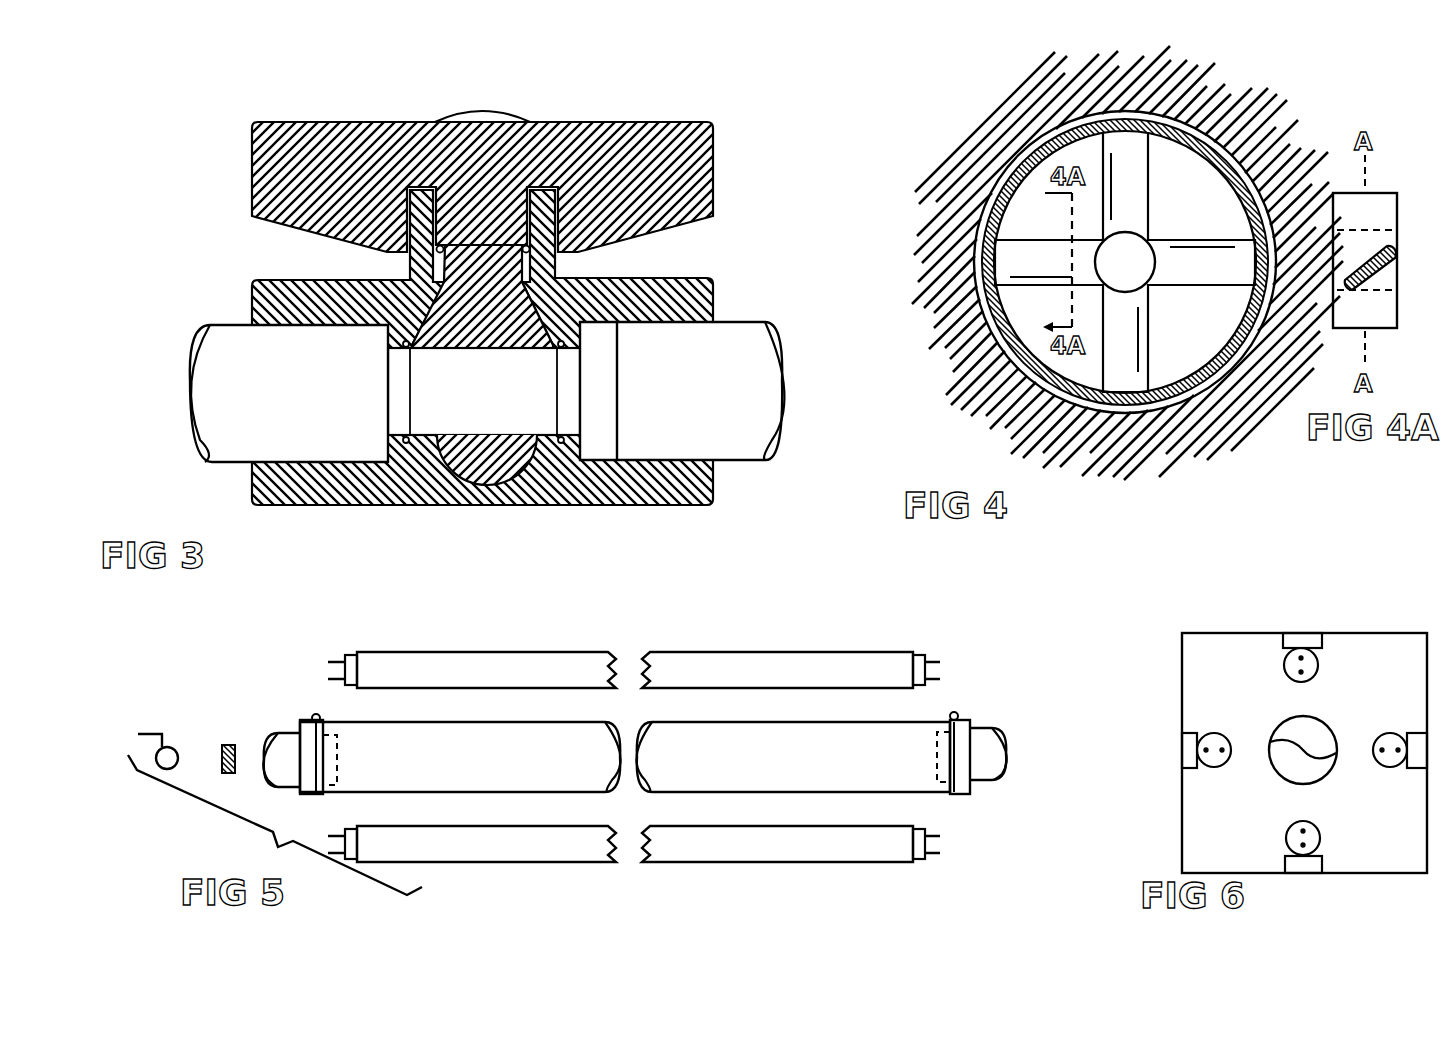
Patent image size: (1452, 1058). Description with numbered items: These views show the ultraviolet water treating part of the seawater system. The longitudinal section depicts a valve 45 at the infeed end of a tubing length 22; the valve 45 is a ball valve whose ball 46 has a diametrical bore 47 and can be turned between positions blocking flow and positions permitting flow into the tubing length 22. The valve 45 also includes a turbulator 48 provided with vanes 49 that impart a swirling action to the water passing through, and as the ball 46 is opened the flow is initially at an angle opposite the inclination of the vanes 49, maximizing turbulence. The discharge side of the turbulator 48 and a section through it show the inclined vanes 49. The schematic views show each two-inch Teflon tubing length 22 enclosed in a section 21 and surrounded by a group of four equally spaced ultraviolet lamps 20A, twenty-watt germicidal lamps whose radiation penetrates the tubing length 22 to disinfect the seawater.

In FIG. 3, the valve 45 is at (266, 108).
In FIG. 5, the valve 45 is at (170, 746).
In FIG. 3, the tubing length 22 is at (770, 322).
In FIG. 5, the tubing length 22 is at (634, 753).
In FIG. 6, the tubing length 22 is at (1280, 780).
In FIG. 3, the ball 46 is at (446, 466).
In FIG. 3, the diametrical bore 47 is at (492, 428).
In FIG. 3, the turbulator 48 is at (596, 452).
In FIG. 4, the turbulator 48 is at (1048, 382).
In FIG. 4, the vanes 49 is at (1150, 178).
In FIG. 4A, the vanes 49 is at (1357, 250).
In FIG. 5, the ultraviolet lamps 20A is at (763, 662).
In FIG. 6, the ultraviolet lamps 20A is at (1380, 735).
In FIG. 6, the section 21 is at (1348, 633).